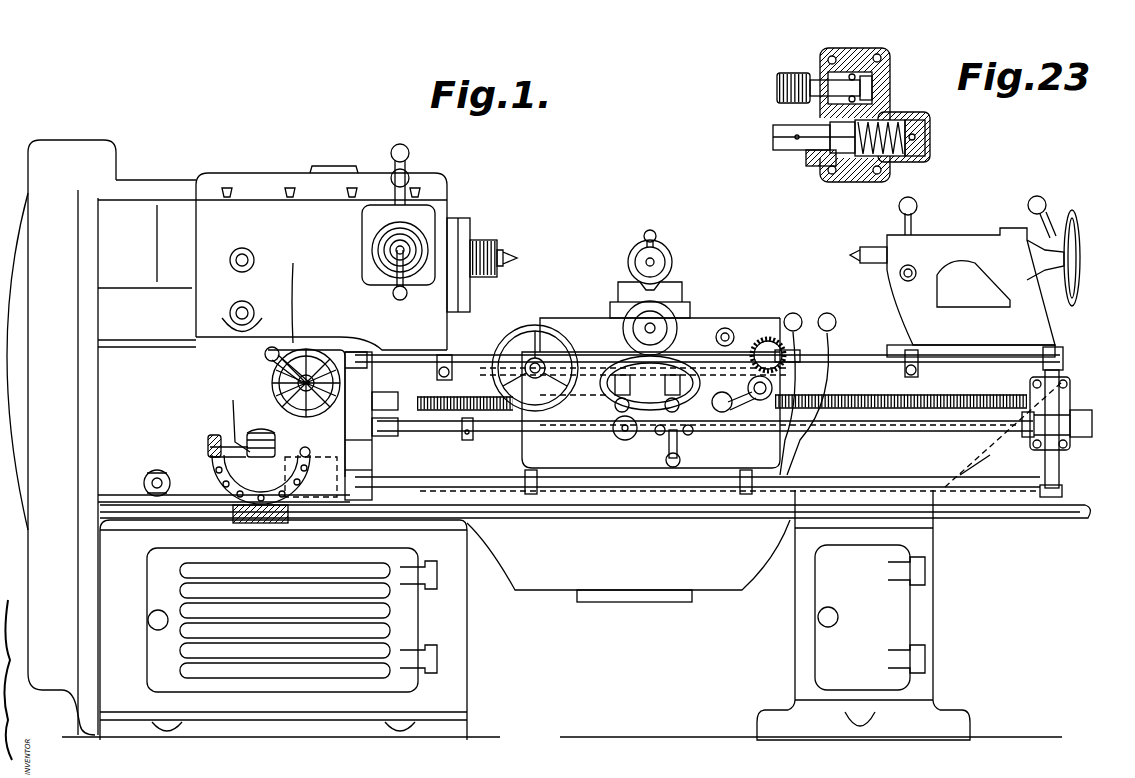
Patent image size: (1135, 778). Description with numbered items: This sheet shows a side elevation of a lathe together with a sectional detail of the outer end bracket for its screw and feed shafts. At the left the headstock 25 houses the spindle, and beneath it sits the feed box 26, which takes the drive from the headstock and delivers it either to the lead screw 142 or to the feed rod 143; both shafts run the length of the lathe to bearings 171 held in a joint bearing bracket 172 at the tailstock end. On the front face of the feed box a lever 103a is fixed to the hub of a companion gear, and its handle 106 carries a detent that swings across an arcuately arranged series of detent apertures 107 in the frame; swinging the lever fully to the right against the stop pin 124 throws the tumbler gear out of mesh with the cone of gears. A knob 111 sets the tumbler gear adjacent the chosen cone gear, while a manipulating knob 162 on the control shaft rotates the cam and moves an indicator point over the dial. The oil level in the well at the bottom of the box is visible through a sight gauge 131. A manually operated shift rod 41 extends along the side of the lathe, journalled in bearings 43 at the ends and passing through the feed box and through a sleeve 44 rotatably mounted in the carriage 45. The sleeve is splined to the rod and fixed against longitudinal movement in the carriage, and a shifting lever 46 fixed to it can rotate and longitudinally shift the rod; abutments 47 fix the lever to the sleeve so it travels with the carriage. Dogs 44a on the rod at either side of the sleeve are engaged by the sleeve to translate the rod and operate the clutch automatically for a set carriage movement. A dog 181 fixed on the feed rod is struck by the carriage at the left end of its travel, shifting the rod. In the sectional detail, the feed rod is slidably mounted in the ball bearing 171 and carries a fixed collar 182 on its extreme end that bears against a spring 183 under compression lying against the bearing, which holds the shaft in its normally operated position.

In FIG. 1, the headstock 25 is at (356, 247).
In FIG. 1, the manipulating knob 162 is at (272, 378).
In FIG. 1, the feed box 26 is at (222, 450).
In FIG. 1, the handle 106 is at (222, 421).
In FIG. 1, the knob 111 is at (262, 432).
In FIG. 1, the lever 103a is at (225, 418).
In FIG. 1, the detent apertures 107 is at (216, 478).
In FIG. 1, the stop pin 124 is at (320, 441).
In FIG. 1, the sight gauge 131 is at (153, 470).
In FIG. 1, the manually operated shift rod 41 is at (470, 357).
In FIG. 1, the dogs 44a is at (442, 360).
In FIG. 1, the lead screw 142 is at (447, 398).
In FIG. 23, the lead screw 142 is at (795, 74).
In FIG. 1, the feed rod 143 is at (428, 431).
In FIG. 23, the feed rod 143 is at (797, 133).
In FIG. 1, the dog 181 is at (470, 438).
In FIG. 1, the carriage 45 is at (595, 426).
In FIG. 1, the sleeve 44 is at (768, 342).
In FIG. 1, the shifting lever 46 is at (797, 340).
In FIG. 1, the abutments 47 is at (772, 368).
In FIG. 1, the bearings 43 is at (1063, 352).
In FIG. 1, the joint bearing bracket 172 is at (1072, 398).
In FIG. 23, the joint bearing bracket 172 is at (818, 164).
In FIG. 1, the bearings 171 is at (1033, 400).
In FIG. 23, the bearings 171 is at (845, 178).
In FIG. 23, the fixed collar 182 is at (909, 122).
In FIG. 23, the spring 183 is at (893, 160).